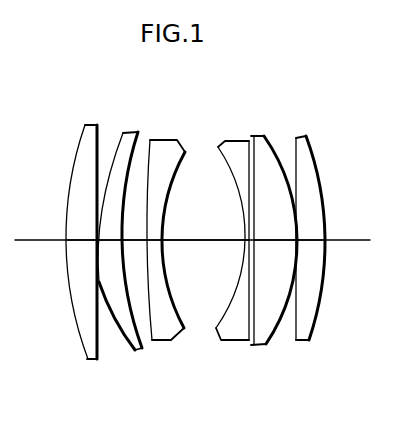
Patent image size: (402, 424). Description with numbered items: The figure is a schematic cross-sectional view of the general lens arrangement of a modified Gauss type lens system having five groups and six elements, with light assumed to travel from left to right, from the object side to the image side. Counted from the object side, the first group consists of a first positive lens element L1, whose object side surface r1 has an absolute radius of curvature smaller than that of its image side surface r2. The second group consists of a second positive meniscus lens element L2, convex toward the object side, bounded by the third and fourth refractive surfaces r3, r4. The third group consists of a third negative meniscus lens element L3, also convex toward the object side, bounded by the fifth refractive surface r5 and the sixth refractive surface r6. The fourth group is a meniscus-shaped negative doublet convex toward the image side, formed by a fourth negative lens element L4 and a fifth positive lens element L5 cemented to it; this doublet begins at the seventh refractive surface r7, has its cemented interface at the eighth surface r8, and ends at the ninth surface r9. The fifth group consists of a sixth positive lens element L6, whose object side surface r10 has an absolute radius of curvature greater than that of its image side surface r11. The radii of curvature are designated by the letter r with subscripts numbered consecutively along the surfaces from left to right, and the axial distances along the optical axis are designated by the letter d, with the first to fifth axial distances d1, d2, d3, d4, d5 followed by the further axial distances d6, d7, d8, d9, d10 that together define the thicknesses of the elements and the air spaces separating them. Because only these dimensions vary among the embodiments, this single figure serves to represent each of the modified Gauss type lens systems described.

The first positive lens element L1 is at (71, 247).
The second positive meniscus lens element L2 is at (129, 236).
The third negative meniscus lens element L3 is at (178, 236).
The fourth negative lens element L4 is at (228, 247).
The fifth positive lens element L5 is at (276, 235).
The sixth positive lens element L6 is at (329, 247).
The object side surface of the first lens element r1 is at (77, 153).
The image side surface of the first lens element r2 is at (97, 130).
The third refractive surface r3 is at (123, 133).
The fourth refractive surface r4 is at (140, 133).
The fifth refractive surface r5 is at (150, 140).
The sixth refractive surface r6 is at (186, 148).
The seventh refractive surface r7 is at (224, 168).
The eighth refractive surface r8 is at (249, 141).
The ninth refractive surface r9 is at (269, 140).
The object side surface of the sixth lens element r10 is at (295, 140).
The image side surface of the sixth lens element r11 is at (306, 137).
The first axial distance d1 is at (78, 240).
The second axial distance d2 is at (100, 283).
The third axial distance d3 is at (110, 240).
The fourth axial distance d4 is at (135, 240).
The fifth axial distance d5 is at (155, 240).
The sixth axial distance d6 is at (201, 240).
The seventh axial distance d7 is at (246, 241).
The eighth axial distance d8 is at (260, 240).
The ninth axial distance d9 is at (301, 240).
The tenth axial distance d10 is at (314, 240).